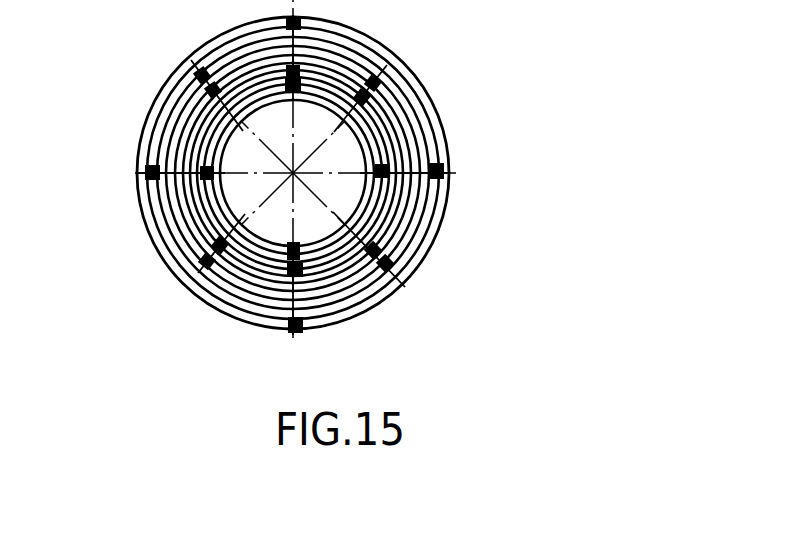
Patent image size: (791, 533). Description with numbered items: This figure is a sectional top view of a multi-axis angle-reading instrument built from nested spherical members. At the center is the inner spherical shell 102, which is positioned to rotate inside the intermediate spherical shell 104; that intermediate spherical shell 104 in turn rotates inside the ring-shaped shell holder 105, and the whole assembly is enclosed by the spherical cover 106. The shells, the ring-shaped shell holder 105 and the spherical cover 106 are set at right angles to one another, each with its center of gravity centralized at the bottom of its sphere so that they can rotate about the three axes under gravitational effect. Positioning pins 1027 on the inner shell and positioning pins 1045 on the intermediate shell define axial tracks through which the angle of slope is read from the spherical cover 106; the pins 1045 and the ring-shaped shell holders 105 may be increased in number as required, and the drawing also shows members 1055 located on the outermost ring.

The inner spherical shell 102 is at (378, 79).
The intermediate spherical shell 104 is at (222, 140).
The ring-shaped shell holder 105 is at (443, 145).
The spherical cover 106 is at (428, 88).
The positioning pin 1027 is at (196, 66).
The positioning pin 1045 is at (148, 176).
The terminal block 1055 is at (300, 17).